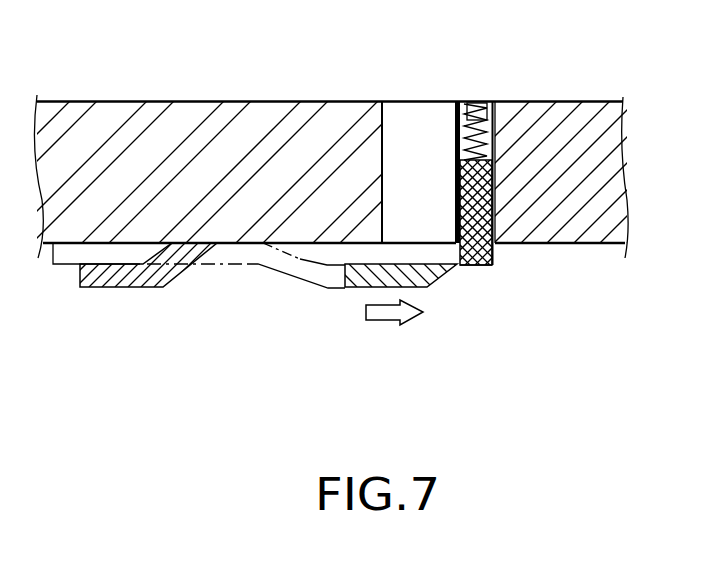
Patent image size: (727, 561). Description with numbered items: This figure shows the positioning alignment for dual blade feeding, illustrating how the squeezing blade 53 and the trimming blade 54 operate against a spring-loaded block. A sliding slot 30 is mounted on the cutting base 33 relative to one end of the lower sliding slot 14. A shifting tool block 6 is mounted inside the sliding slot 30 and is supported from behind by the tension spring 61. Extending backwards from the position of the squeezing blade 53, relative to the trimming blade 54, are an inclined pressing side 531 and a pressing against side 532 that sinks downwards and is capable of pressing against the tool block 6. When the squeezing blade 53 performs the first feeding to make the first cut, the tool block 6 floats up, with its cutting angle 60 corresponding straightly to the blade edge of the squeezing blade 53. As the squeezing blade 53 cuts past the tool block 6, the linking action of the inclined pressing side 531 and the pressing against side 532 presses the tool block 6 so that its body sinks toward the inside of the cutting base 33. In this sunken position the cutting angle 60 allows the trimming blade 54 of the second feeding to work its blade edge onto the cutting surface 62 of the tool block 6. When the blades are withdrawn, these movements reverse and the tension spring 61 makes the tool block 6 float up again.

The pressing against side 532 is at (246, 230).
The lower sliding slot 14 is at (402, 132).
The tension spring 61 is at (501, 110).
The cutting base 33 is at (591, 105).
The trimming blade 54 is at (121, 285).
The inclined pressing side 531 is at (291, 258).
The squeezing blade 53 is at (364, 288).
The cutting angle 60 is at (458, 274).
The cutting surface 62 is at (472, 266).
The shifting tool block 6 is at (482, 264).
The sliding slot 30 is at (495, 197).